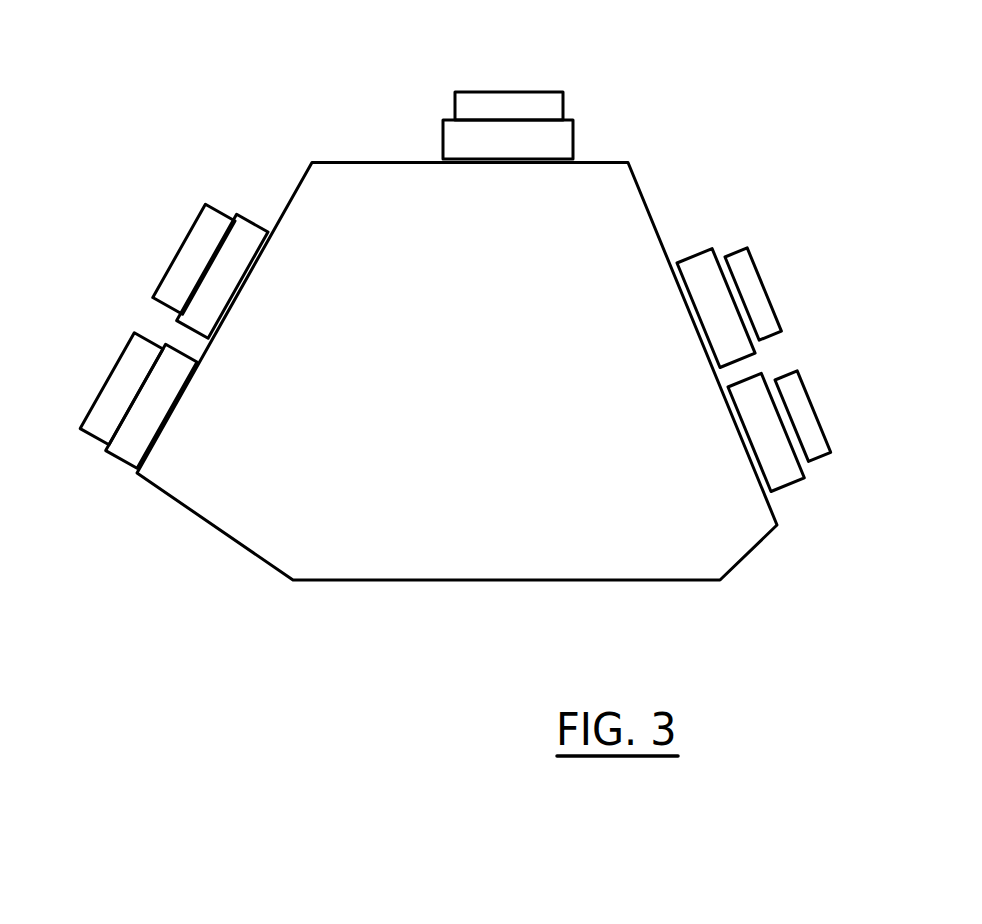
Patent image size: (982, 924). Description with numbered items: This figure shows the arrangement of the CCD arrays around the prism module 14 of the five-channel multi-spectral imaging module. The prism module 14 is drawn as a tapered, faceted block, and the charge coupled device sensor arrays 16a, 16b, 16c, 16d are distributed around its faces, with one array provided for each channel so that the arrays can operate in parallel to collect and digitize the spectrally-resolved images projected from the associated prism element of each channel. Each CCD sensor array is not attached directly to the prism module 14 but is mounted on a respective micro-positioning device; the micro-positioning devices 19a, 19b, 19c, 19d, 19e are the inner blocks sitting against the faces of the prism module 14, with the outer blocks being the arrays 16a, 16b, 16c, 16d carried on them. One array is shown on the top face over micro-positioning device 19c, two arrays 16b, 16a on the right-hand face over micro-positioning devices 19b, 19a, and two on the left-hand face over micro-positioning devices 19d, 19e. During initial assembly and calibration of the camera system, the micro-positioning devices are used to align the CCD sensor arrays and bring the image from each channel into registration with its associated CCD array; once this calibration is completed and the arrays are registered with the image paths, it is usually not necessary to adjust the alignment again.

The prism module 14 is at (273, 608).
The CCD sensor array 16a is at (815, 412).
The CCD sensor array 16b is at (762, 278).
The CCD sensor array 16c is at (480, 95).
The CCD sensor array 16d is at (184, 246).
The micro-positioning device 19a is at (790, 486).
The micro-positioning device 19b is at (691, 255).
The micro-positioning device 19c is at (575, 139).
The micro-positioning device 19d is at (253, 220).
The micro-positioning device 19e is at (122, 463).